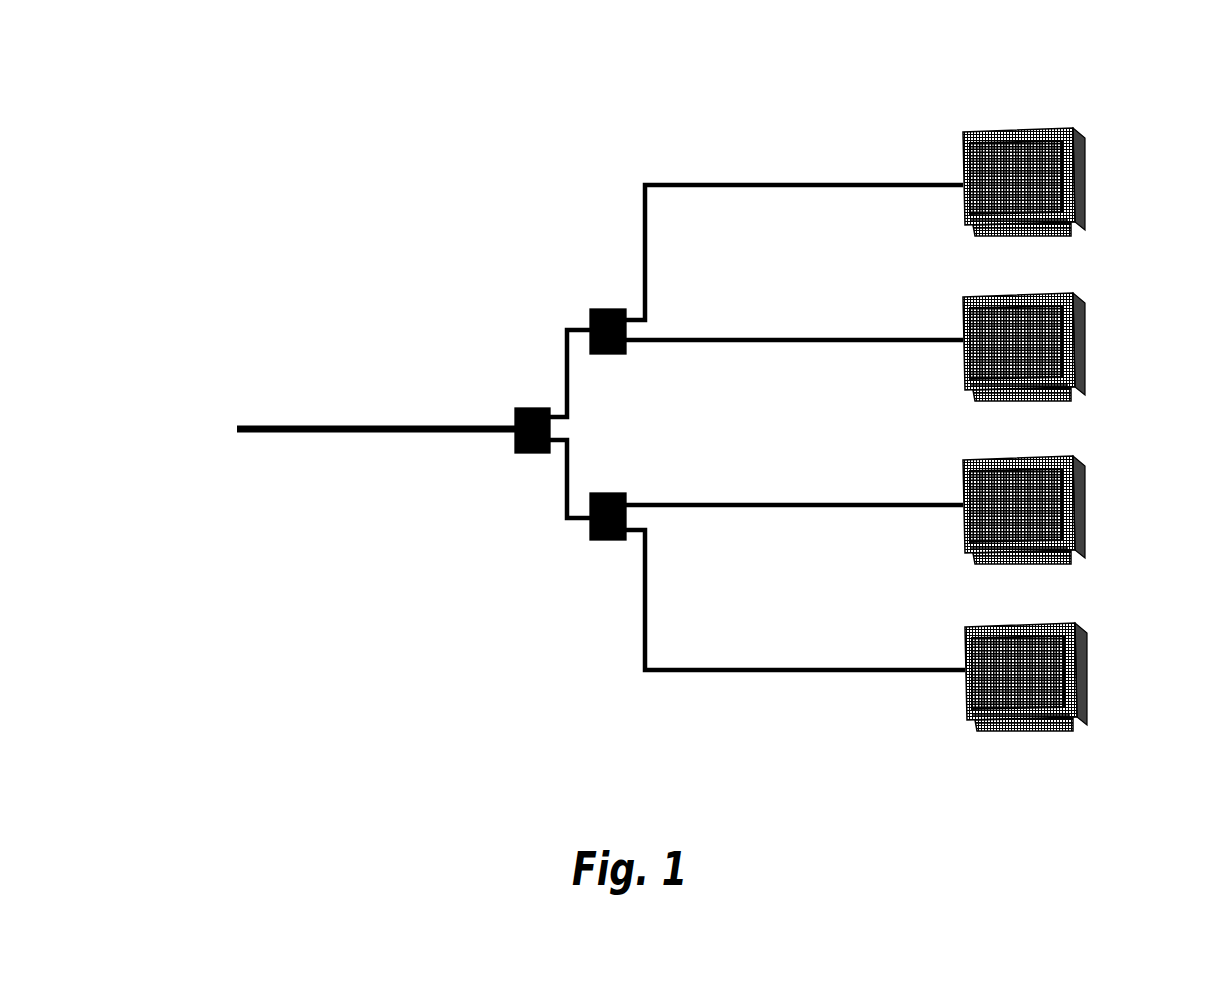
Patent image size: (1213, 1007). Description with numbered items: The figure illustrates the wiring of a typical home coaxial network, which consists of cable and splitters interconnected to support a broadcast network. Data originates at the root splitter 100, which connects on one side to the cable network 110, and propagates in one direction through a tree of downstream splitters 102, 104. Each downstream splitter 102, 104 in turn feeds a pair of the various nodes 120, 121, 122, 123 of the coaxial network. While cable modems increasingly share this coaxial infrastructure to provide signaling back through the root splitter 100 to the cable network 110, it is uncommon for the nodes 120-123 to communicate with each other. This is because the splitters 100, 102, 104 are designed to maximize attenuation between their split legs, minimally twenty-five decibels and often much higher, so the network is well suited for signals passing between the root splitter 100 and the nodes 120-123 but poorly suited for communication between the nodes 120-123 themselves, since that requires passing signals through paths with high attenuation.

The root splitter 100 is at (515, 408).
The downstream splitter 102 is at (590, 309).
The downstream splitter 104 is at (597, 543).
The cable network 110 is at (317, 435).
The node 120 is at (1023, 157).
The node 121 is at (1023, 321).
The node 122 is at (1028, 497).
The node 123 is at (1028, 660).